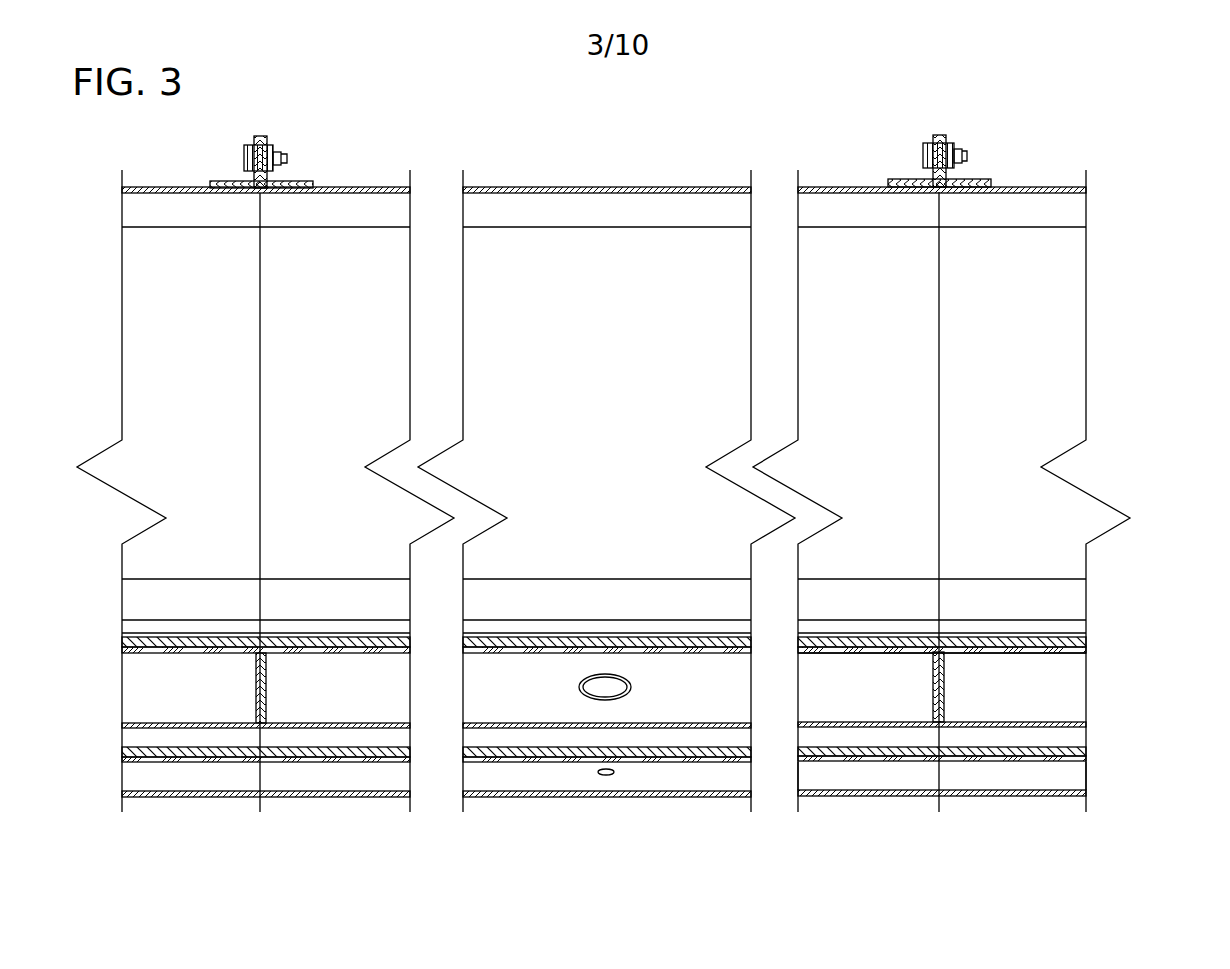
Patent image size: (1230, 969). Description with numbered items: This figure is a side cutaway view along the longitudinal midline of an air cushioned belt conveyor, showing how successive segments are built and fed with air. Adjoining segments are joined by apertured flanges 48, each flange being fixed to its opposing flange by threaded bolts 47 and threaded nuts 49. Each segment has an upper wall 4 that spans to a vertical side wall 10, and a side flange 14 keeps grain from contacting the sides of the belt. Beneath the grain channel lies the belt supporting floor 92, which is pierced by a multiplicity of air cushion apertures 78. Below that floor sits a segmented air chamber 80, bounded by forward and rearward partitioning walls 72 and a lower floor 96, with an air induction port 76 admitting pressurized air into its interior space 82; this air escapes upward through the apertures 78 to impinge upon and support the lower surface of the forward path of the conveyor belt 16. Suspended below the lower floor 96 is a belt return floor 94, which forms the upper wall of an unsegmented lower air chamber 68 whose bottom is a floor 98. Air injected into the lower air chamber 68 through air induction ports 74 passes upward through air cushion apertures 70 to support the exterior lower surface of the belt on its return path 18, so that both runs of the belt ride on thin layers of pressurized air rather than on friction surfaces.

The upper wall 4 is at (388, 187).
The vertical side wall 10 is at (620, 295).
The side flange 14 is at (1050, 593).
The forward path of the conveyor belt 16 is at (1080, 640).
The return path of the belt 18 is at (1075, 750).
The threaded bolt 47 is at (247, 159).
The apertured flange 48 is at (262, 136).
The threaded nut 49 is at (282, 157).
The unsegmented lower air chamber 68 is at (995, 767).
The air cushion aperture 70 is at (879, 760).
The partitioning wall 72 is at (942, 675).
The air induction port 74 is at (606, 776).
The air induction port 76 is at (607, 687).
The air cushion aperture 78 is at (488, 653).
The segmented air chamber 80 is at (337, 690).
The interior space of the segmented air chamber 82 is at (1031, 680).
The belt supporting floor 92 is at (1070, 652).
The belt return floor 94 is at (1060, 758).
The lower floor 96 is at (1065, 722).
The floor 98 is at (1070, 797).